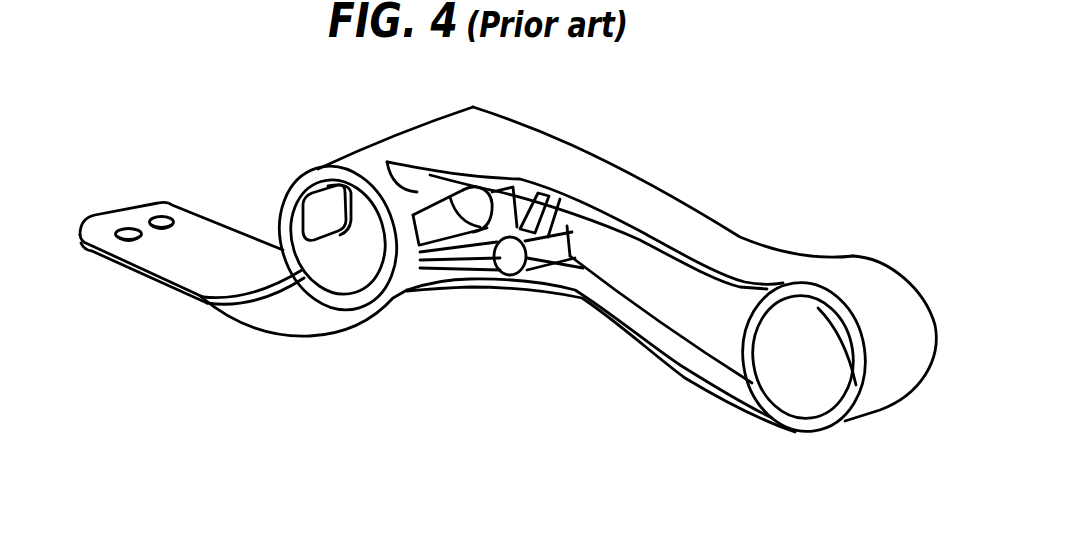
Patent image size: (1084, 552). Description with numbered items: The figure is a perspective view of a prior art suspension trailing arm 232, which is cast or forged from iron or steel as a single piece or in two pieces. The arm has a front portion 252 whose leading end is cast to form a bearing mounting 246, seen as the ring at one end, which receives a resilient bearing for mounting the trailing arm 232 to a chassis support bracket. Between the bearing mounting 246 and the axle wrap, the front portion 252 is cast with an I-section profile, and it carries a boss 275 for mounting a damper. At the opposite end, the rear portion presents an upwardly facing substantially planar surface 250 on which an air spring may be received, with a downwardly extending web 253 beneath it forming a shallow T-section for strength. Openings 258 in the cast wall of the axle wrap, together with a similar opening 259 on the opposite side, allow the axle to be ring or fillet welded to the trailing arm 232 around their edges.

The trailing arm 232 is at (662, 178).
The bearing mounting 246 is at (822, 402).
The substantially planar surface 250 is at (138, 214).
The front portion 252 is at (742, 246).
The downwardly extending web 253 is at (277, 320).
The openings 258 is at (328, 197).
The opening 259 is at (427, 235).
The boss 275 is at (537, 255).